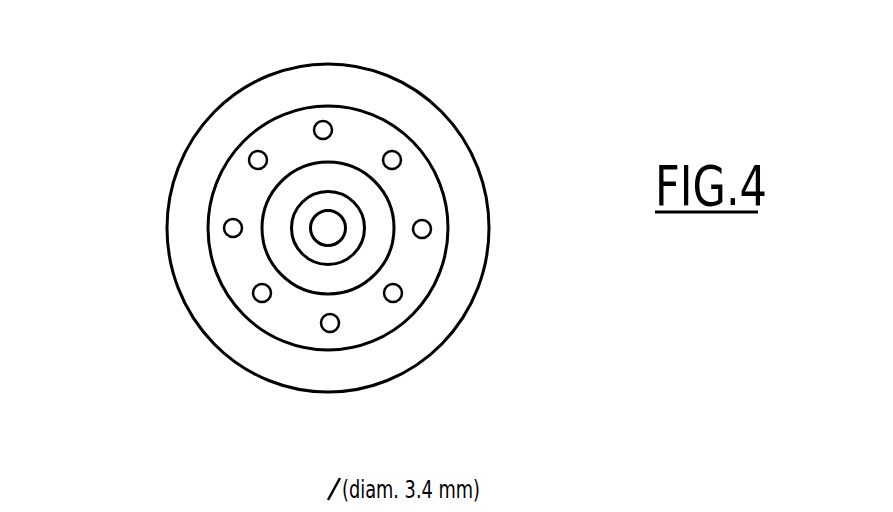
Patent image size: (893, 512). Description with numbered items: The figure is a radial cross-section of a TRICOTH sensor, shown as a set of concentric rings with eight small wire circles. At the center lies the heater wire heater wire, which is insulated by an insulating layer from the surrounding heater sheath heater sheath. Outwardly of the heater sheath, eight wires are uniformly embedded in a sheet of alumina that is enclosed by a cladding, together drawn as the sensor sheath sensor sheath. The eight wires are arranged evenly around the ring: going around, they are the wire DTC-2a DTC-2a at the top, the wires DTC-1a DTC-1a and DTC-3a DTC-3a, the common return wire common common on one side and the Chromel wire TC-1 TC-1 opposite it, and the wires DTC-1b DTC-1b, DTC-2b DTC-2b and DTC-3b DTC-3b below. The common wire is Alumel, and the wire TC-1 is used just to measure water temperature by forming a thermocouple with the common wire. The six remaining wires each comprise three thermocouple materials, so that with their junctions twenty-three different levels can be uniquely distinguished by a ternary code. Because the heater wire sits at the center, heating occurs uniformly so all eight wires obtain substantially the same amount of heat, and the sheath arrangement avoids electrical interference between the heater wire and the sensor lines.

The thermocouple wire 3a DTC-3a is at (289, 91).
The thermocouple wire 2a DTC-2a is at (315, 128).
The thermocouple wire 1a DTC-1a is at (249, 158).
The common wire common is at (224, 228).
The central heater wire is at (312, 231).
The heater sheet heater sheath is at (252, 312).
The sheet of Al2O3 with cladding sensor sheath is at (272, 367).
The wire tc1 TC-1 is at (431, 229).
The thermocouple wire 3b DTC-3b is at (401, 297).
The thermocouple wire 2b DTC-2b is at (338, 327).
The thermocouple wire 1b DTC-1b is at (370, 359).